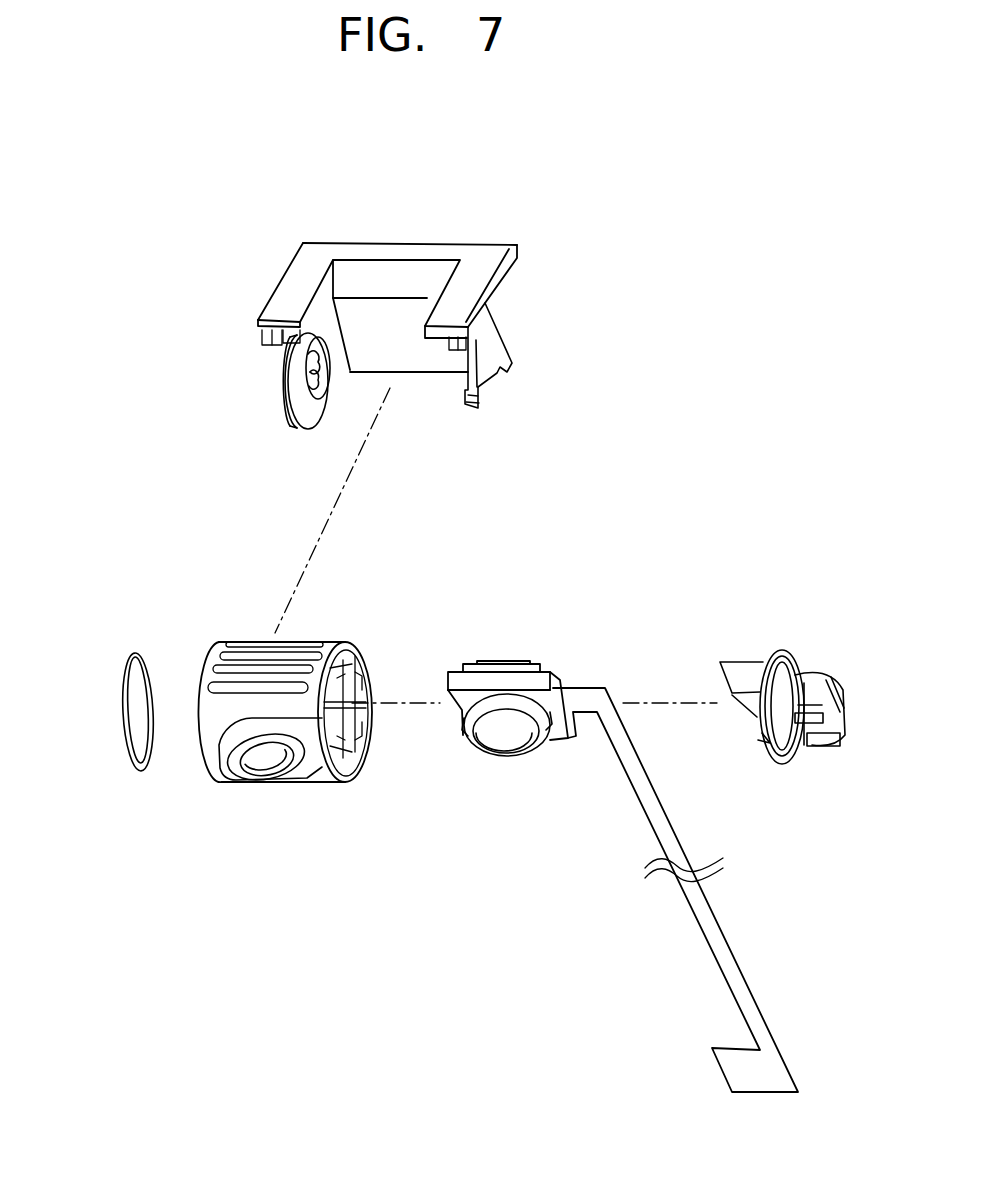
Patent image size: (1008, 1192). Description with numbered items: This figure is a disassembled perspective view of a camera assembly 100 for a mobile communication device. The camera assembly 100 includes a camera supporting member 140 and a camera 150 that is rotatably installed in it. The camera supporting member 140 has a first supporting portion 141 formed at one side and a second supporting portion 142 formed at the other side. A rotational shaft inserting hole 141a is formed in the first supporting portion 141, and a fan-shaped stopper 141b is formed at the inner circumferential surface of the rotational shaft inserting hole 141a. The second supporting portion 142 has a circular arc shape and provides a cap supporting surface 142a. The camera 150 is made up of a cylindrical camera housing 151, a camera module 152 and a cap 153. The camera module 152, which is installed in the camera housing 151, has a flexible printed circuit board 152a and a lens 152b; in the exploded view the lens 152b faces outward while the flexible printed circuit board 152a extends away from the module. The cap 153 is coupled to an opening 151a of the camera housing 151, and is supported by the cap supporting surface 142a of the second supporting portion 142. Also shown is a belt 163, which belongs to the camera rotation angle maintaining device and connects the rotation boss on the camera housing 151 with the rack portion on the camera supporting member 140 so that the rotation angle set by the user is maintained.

The camera assembly 100 is at (292, 183).
The camera supporting member 140 is at (527, 238).
The first supporting portion 141 is at (320, 413).
The rotational shaft inserting hole 141a is at (307, 390).
The stopper 141b is at (290, 345).
The second supporting portion 142 is at (488, 378).
The cap supporting surface 142a is at (467, 386).
The camera 150 is at (220, 808).
The cylindrical camera housing 151 is at (316, 770).
The opening 151a is at (360, 656).
The camera module 152 is at (570, 832).
The flexible printed circuit board 152a is at (586, 705).
The lens 152b is at (502, 738).
The cap 153 is at (776, 648).
The belt 163 is at (124, 760).